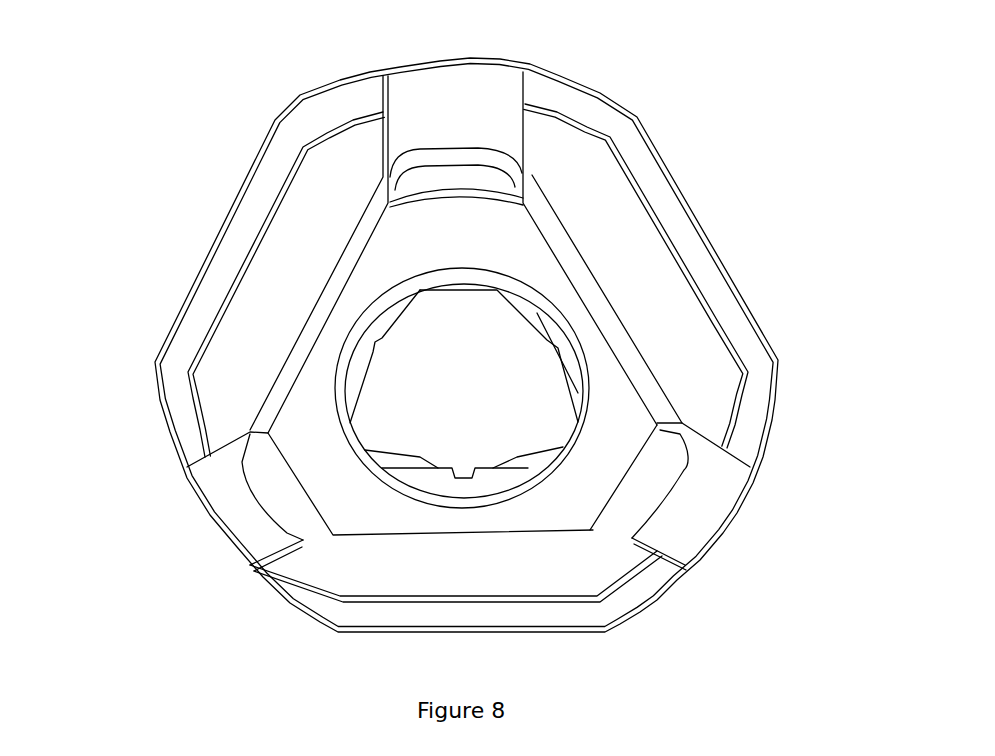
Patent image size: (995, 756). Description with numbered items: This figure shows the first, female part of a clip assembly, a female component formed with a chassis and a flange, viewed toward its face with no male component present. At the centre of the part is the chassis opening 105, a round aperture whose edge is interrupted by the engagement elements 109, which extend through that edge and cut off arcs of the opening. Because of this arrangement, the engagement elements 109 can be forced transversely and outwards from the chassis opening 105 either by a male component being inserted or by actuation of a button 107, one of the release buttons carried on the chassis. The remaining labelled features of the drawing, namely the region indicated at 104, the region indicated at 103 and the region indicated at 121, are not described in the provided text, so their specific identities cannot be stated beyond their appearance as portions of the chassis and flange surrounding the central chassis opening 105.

The housing body 104 is at (620, 130).
The inner frame face 103 is at (525, 238).
The chassis opening 105 is at (462, 388).
The recess 121 is at (638, 363).
The button 107 is at (652, 490).
The engagement elements 109 is at (362, 353).